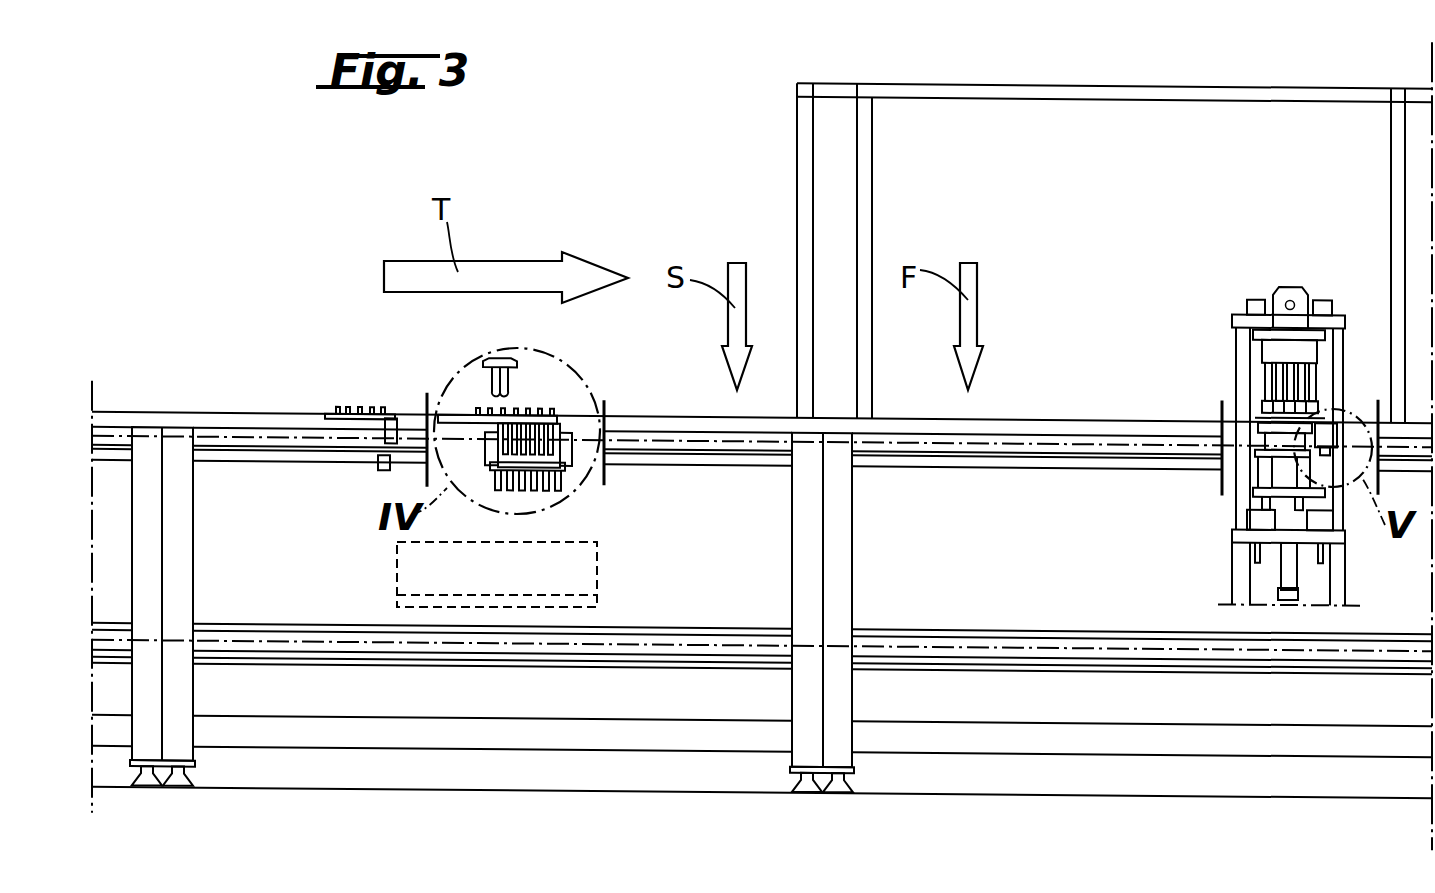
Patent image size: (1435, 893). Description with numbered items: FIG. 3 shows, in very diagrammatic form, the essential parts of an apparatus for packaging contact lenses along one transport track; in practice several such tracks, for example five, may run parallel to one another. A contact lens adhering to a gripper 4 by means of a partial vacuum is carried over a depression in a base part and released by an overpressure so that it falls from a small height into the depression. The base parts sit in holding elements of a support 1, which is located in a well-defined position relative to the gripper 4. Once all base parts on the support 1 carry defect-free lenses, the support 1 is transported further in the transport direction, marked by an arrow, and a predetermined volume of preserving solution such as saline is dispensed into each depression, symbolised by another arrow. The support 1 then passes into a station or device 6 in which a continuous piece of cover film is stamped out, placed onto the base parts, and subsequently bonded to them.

The support 1 is at (353, 398).
The gripper 4 is at (500, 357).
The station or device 6 is at (1277, 80).